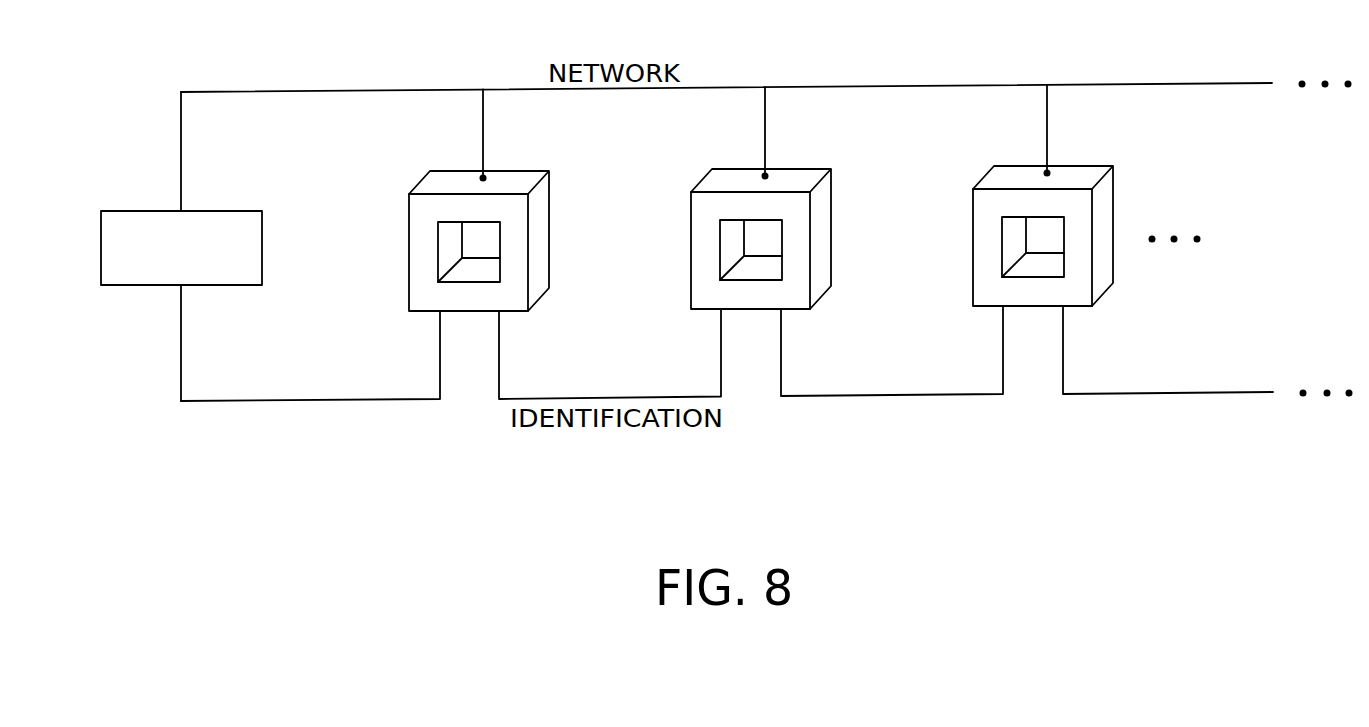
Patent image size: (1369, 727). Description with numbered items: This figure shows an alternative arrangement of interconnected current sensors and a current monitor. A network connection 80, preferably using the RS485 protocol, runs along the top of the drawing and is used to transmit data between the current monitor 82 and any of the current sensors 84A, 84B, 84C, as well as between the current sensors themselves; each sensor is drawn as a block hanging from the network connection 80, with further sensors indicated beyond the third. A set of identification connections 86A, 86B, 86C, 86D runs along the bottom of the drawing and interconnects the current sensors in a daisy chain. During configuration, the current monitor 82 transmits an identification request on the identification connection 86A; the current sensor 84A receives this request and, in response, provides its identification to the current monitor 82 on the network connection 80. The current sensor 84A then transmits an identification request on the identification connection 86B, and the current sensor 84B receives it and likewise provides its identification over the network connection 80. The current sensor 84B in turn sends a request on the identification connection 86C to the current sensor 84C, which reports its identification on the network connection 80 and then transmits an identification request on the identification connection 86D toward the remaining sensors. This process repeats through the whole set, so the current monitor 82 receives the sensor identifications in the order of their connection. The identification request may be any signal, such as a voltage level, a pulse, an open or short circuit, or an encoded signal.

The network connection 80 is at (923, 84).
The current monitor 82 is at (231, 211).
The current sensor 84A is at (518, 171).
The current sensor 84B is at (800, 169).
The current sensor 84C is at (1082, 166).
The identification connection 86A is at (292, 400).
The identification connection 86B is at (580, 397).
The identification connection 86C is at (862, 396).
The identification connection 86D is at (1147, 393).